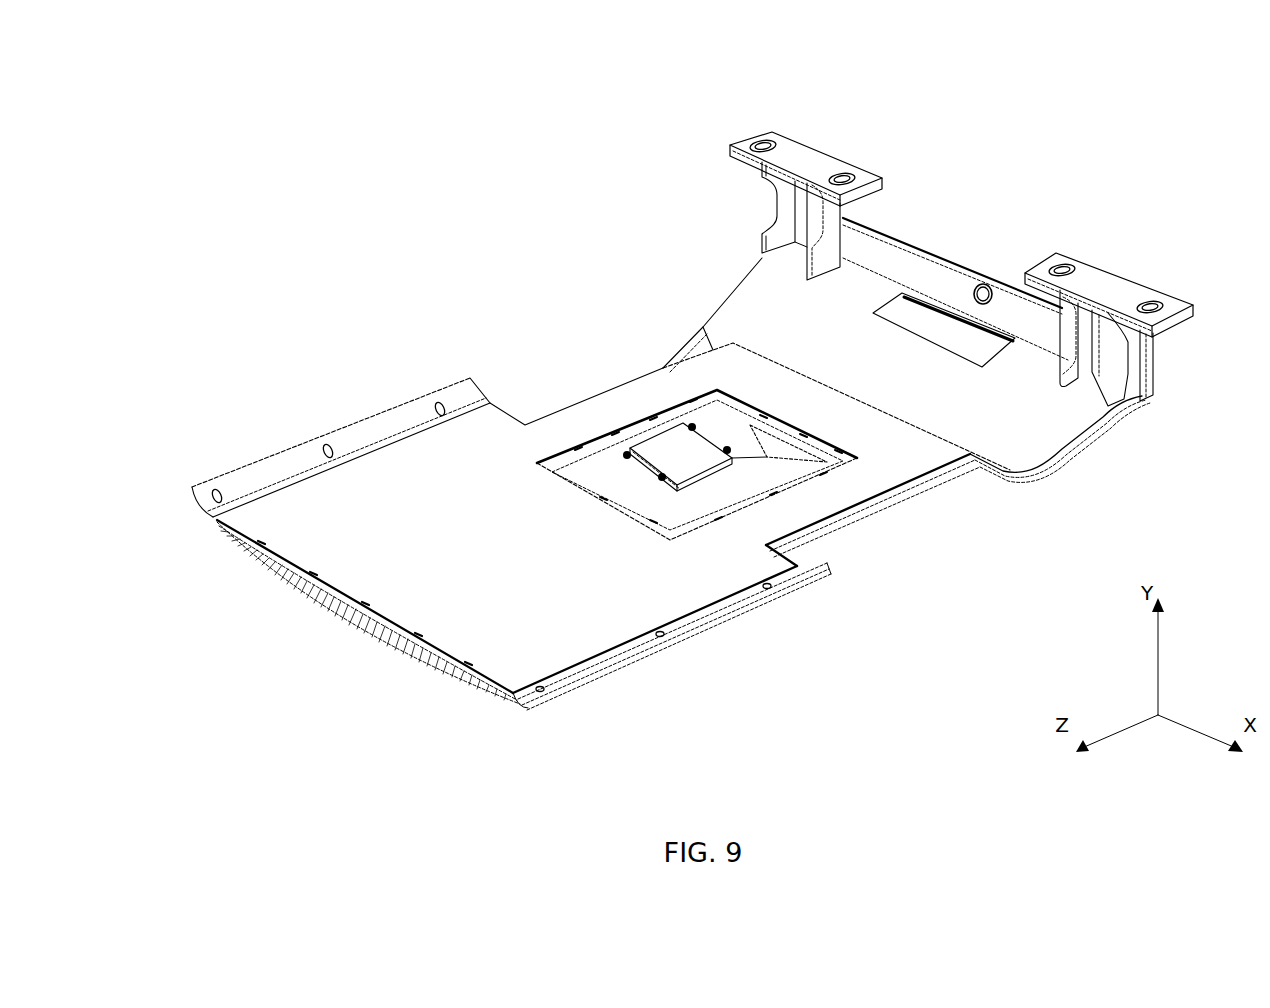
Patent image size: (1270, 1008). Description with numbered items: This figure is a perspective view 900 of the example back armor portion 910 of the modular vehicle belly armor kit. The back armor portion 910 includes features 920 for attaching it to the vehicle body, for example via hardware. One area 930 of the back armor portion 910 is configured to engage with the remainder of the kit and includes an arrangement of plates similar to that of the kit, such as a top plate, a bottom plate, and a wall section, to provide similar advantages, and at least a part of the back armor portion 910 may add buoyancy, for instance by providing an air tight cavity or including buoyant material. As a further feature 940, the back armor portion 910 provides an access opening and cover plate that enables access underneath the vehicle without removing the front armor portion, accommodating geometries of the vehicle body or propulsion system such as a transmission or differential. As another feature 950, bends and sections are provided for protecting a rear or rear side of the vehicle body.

The perspective view 900 is at (214, 114).
The back armor portion 910 is at (418, 197).
The features for attaching to the vehicle body 920 is at (716, 140).
The area configured to engage with the portion 930 is at (295, 628).
The access opening and cover plate feature 940 is at (610, 517).
The bends and sections feature 950 is at (1127, 433).